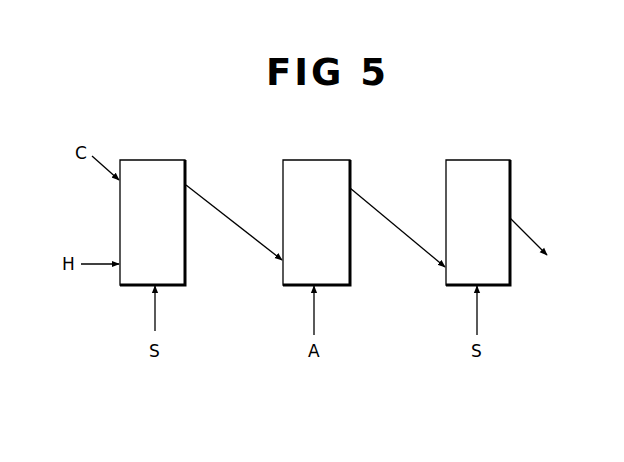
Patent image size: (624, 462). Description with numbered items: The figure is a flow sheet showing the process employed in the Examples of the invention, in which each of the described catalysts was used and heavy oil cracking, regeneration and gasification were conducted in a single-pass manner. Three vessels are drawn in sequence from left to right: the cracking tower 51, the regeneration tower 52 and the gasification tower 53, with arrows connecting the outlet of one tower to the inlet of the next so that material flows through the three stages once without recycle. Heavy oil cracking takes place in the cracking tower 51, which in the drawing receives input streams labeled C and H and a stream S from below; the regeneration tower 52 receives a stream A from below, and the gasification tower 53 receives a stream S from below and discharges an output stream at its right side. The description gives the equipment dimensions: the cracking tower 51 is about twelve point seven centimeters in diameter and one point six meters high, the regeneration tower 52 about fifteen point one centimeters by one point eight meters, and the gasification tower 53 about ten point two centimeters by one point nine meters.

The cracking tower 51 is at (183, 167).
The regeneration tower 52 is at (350, 163).
The gasification tower 53 is at (503, 168).